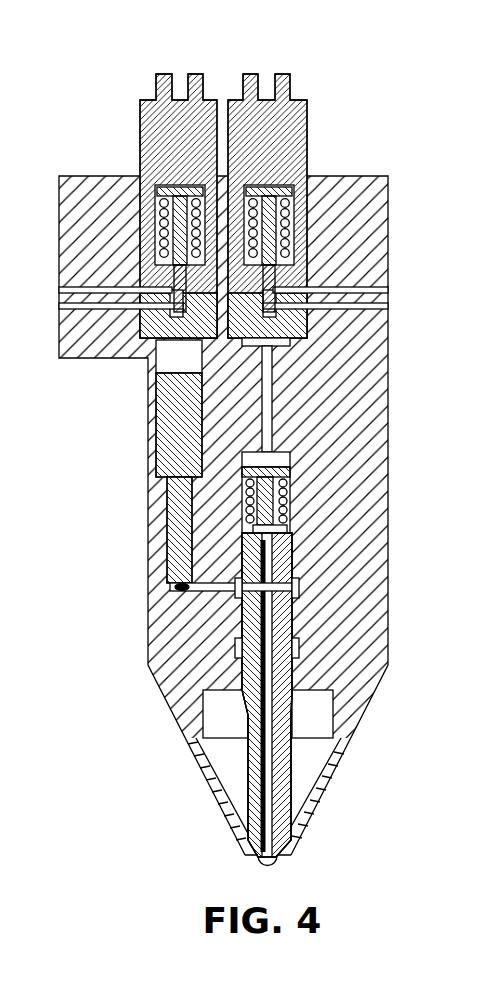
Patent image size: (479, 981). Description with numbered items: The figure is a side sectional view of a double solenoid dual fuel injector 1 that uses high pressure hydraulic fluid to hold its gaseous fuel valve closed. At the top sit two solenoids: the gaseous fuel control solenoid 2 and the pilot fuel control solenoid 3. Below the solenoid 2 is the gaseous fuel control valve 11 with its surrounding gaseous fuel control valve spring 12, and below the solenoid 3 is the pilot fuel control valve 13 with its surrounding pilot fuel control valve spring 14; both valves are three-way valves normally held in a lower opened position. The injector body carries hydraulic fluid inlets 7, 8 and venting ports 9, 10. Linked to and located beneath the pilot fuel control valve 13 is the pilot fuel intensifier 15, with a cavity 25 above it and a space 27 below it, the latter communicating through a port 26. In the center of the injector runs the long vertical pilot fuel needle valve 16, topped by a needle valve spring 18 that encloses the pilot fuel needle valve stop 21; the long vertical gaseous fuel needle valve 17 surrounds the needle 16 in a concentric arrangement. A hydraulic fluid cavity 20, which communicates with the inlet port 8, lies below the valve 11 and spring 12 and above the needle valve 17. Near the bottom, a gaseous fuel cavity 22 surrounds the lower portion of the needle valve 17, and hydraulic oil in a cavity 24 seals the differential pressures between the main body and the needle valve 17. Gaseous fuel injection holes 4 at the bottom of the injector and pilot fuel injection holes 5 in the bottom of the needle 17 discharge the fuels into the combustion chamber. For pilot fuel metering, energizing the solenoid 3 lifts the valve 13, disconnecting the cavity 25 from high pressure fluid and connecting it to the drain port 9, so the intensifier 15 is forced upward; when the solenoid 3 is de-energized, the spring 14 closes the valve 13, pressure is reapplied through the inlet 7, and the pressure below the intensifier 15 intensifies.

The double solenoid dual fuel injector 1 is at (388, 210).
The gaseous fuel control solenoid 2 is at (300, 125).
The pilot fuel control solenoid 3 is at (140, 126).
The gaseous fuel injection holes 4 is at (288, 841).
The pilot fuel injection holes 5 is at (280, 865).
The hydraulic fluid inlet 7 is at (59, 307).
The hydraulic fluid inlet port 8 is at (388, 305).
The venting port 9 is at (59, 290).
The venting port 10 is at (388, 288).
The gaseous fuel control valve 11 is at (265, 198).
The gaseous fuel control valve spring 12 is at (290, 225).
The pilot fuel control valve 13 is at (163, 197).
The pilot fuel control valve spring 14 is at (158, 232).
The pilot fuel intensifier 15 is at (165, 440).
The pilot fuel needle valve 16 is at (238, 638).
The gaseous fuel needle valve 17 is at (224, 702).
The needle valve spring 18 is at (285, 500).
The hydraulic fluid cavity 20 is at (290, 457).
The pilot fuel needle valve stop 21 is at (287, 526).
The gaseous fuel cavity 22 is at (322, 712).
The hydraulic oil cavity 24 is at (299, 648).
The cavity above intensifier 25 is at (152, 366).
The port 26 is at (200, 595).
The space below intensifier 27 is at (178, 586).